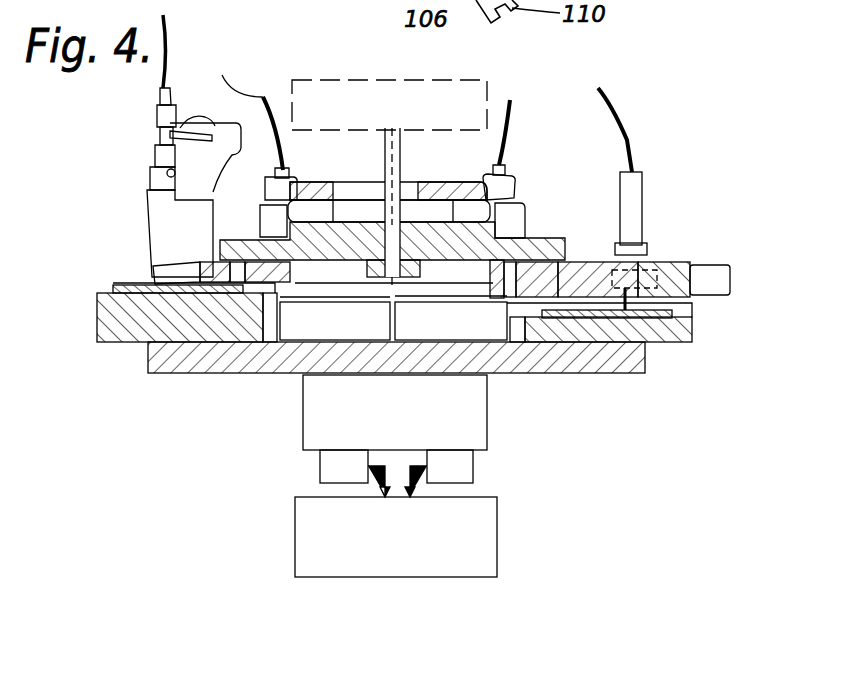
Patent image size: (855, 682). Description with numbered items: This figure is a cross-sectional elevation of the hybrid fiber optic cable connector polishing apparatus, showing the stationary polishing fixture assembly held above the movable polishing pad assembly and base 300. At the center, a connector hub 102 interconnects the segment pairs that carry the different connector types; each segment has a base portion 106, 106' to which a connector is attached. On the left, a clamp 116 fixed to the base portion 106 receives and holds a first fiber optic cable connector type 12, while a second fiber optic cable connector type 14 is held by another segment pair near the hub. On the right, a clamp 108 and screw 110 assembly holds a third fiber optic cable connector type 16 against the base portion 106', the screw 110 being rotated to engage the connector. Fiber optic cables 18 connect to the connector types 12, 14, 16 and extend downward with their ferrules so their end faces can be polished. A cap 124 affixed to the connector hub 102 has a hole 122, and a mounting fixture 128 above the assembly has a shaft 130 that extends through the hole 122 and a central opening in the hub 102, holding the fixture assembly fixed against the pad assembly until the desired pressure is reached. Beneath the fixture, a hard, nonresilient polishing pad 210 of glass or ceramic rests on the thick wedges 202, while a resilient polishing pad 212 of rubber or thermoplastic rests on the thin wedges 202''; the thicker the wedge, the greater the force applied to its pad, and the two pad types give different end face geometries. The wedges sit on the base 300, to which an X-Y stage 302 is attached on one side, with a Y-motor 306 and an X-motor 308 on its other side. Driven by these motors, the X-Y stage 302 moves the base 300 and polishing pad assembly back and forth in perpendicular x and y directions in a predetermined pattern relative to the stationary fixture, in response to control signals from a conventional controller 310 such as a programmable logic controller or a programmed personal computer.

The first fiber optic cable connector type 12 is at (160, 117).
The second fiber optic cable connector type 14 is at (506, 190).
The third fiber optic cable connector type 16 is at (642, 190).
The fiber optic cable 18 is at (600, 98).
The connector hub 102 is at (543, 243).
The base portion 106 is at (191, 256).
The base portion 106' is at (580, 270).
The clamp 108 is at (675, 265).
The screw 110 is at (712, 270).
The clamp 116 is at (157, 205).
The hole 122 is at (410, 190).
The cap 124 is at (450, 195).
The mounting fixture 128 is at (472, 100).
The shaft 130 is at (392, 162).
The first pair of wedges 202 is at (178, 340).
The third pair of wedges 202'' is at (621, 352).
The nonresilient polishing pad material 210 is at (113, 290).
The resilient polishing pad material 212 is at (665, 309).
The base 300 is at (625, 365).
The X-Y stage 302 is at (487, 415).
The Y-motor 306 is at (473, 462).
The X-motor 308 is at (320, 465).
The controller 310 is at (497, 527).